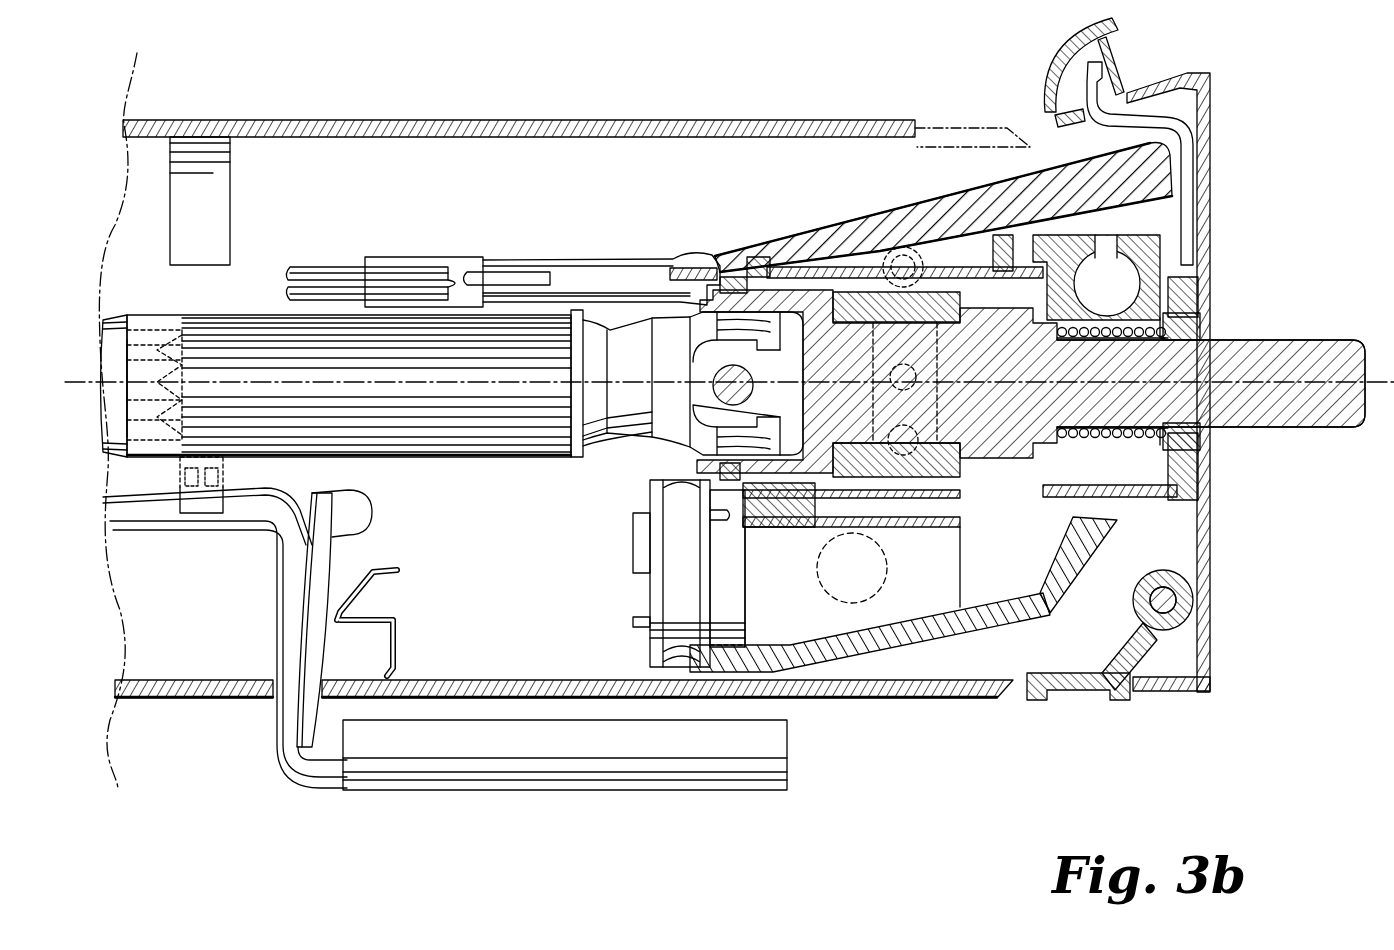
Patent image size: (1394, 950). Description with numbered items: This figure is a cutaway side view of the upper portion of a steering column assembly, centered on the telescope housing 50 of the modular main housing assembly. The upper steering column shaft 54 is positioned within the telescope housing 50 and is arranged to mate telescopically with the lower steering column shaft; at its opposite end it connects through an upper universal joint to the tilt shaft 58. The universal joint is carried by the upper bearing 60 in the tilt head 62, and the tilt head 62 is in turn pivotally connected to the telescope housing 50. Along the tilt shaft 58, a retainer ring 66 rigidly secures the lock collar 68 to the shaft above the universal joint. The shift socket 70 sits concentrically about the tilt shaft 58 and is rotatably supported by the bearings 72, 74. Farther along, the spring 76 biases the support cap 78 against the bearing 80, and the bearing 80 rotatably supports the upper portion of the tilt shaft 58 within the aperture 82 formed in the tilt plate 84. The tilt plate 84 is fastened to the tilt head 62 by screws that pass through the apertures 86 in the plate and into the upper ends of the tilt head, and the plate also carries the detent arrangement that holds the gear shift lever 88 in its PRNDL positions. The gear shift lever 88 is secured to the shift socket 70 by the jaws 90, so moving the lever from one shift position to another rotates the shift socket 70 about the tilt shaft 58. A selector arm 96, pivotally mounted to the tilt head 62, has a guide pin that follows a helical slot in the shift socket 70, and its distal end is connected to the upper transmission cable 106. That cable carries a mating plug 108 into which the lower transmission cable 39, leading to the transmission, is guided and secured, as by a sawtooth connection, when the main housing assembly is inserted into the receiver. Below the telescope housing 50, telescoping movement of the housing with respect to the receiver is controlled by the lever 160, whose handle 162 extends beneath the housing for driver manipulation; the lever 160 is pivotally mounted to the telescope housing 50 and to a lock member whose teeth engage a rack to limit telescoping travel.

The telescope housing 50 is at (280, 118).
The lower transmission cable 39 is at (325, 267).
The mating plug 108 is at (467, 257).
The upper transmission cable 106 is at (590, 272).
The upper steering column shaft 54 is at (463, 457).
The upper bearing 60 is at (727, 265).
The bearing 72 is at (762, 250).
The lock collar 68 is at (817, 222).
The selector arm 96 is at (847, 267).
The tilt head 62 is at (903, 247).
The shift socket 70 is at (958, 255).
The gear shift lever 88 is at (1123, 150).
The apertures 86 is at (1200, 163).
The jaws 90 is at (1150, 233).
The bearing 74 is at (1210, 270).
The aperture 82 is at (1203, 333).
The bearing 80 is at (1200, 427).
The tilt shaft 58 is at (1333, 427).
The support cap 78 is at (1163, 445).
The retainer ring 66 is at (973, 442).
The spring 76 is at (1060, 445).
The tilt plate 84 is at (1210, 662).
The lever 160 is at (265, 745).
The handle 162 is at (380, 792).